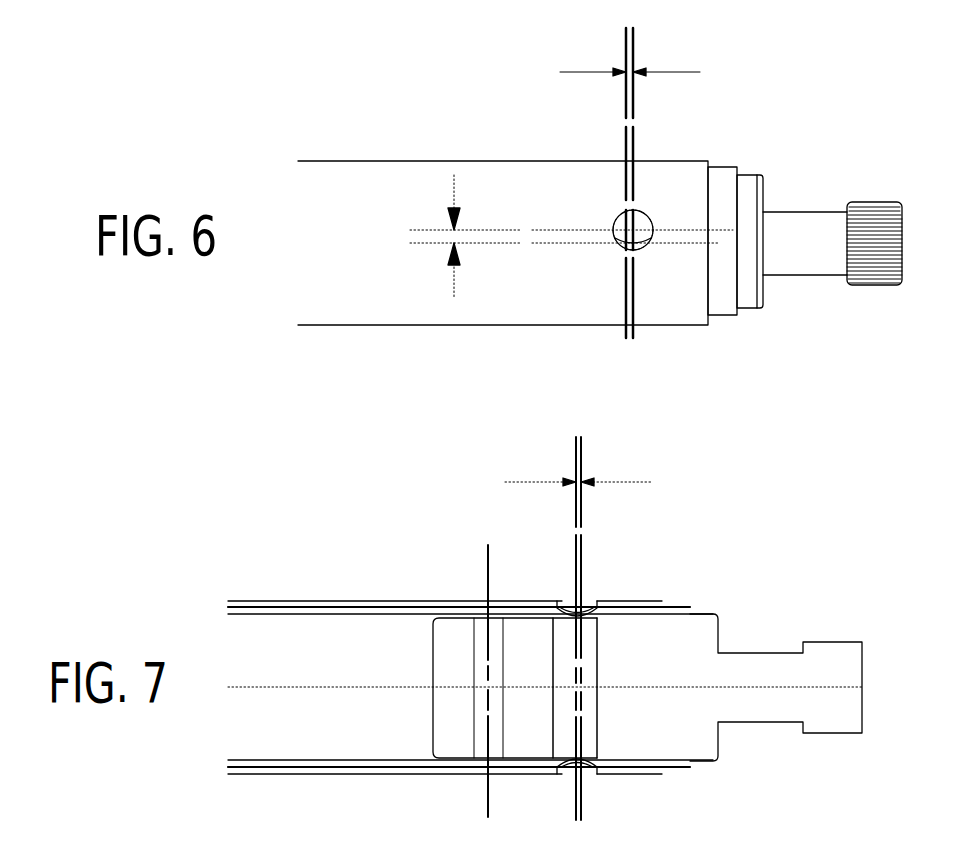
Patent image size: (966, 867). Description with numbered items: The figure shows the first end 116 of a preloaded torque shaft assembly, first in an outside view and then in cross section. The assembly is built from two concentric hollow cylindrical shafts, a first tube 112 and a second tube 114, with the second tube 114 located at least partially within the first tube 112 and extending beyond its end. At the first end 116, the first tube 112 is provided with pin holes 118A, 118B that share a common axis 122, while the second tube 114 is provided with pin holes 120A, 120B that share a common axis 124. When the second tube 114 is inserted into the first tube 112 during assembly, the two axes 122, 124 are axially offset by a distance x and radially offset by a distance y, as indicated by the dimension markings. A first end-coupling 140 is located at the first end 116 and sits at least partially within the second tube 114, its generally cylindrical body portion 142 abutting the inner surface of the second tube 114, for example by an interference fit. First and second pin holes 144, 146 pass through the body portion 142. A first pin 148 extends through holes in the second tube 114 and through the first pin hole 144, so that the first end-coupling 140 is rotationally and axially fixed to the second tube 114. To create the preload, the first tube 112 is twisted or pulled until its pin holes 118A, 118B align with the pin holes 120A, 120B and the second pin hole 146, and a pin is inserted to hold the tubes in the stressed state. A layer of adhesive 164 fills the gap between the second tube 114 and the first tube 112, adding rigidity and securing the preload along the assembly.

In FIG. 6, the first tube 112 is at (380, 161).
In FIG. 7, the first tube 112 is at (270, 602).
In FIG. 6, the second tube 114 is at (722, 317).
In FIG. 7, the second tube 114 is at (317, 614).
In FIG. 6, the torque shaft assembly first end 116 is at (790, 142).
In FIG. 7, the torque shaft assembly first end 116 is at (728, 547).
In FIG. 6, the pin hole 118A is at (641, 208).
In FIG. 7, the pin hole 118A is at (583, 608).
In FIG. 7, the pin hole 118B is at (583, 770).
In FIG. 6, the pin hole 120A is at (625, 238).
In FIG. 7, the pin hole 120A is at (583, 617).
In FIG. 7, the pin hole 120B is at (582, 757).
In FIG. 7, the common axis 122 is at (583, 470).
In FIG. 7, the common axis 124 is at (572, 463).
In FIG. 6, the first end-coupling 140 is at (778, 227).
In FIG. 7, the first end-coupling 140 is at (700, 635).
In FIG. 7, the body portion 142 is at (438, 708).
In FIG. 7, the first pin hole 144 is at (474, 733).
In FIG. 7, the second pin hole 146 is at (558, 747).
In FIG. 7, the first pin 148 is at (482, 657).
In FIG. 7, the adhesive 164 is at (257, 770).